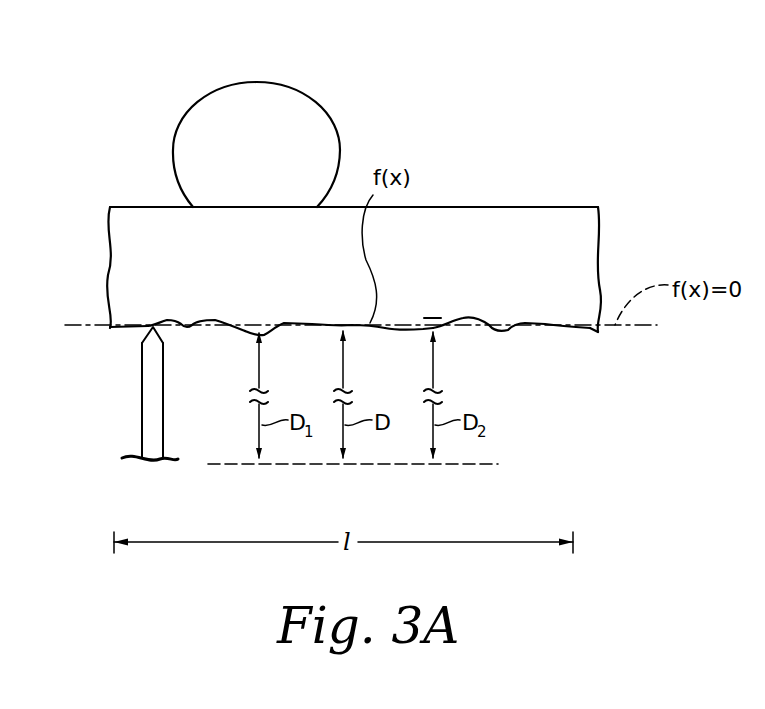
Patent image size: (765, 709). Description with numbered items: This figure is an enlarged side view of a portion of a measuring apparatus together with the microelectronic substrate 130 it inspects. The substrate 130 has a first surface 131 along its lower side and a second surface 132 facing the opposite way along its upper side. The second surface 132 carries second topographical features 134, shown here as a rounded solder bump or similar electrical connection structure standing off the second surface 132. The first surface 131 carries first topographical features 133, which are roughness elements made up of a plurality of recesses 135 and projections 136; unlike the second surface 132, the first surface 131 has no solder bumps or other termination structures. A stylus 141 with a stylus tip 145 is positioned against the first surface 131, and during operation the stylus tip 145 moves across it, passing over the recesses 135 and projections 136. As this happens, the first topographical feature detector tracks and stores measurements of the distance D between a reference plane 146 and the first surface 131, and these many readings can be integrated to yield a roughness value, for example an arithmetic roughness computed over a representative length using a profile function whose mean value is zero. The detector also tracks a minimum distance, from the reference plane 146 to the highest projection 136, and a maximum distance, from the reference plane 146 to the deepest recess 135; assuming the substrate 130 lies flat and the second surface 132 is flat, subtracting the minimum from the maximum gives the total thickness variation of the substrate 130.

The microelectronic substrate 130 is at (585, 240).
The first surface 131 is at (585, 332).
The second surface 132 is at (492, 207).
The first topographical features 133 is at (518, 340).
The second topographical features 134 is at (320, 132).
The recesses 135 is at (170, 320).
The projections 136 is at (426, 333).
The stylus 141 is at (163, 380).
The stylus tip 145 is at (143, 334).
The reference plane 146 is at (292, 482).